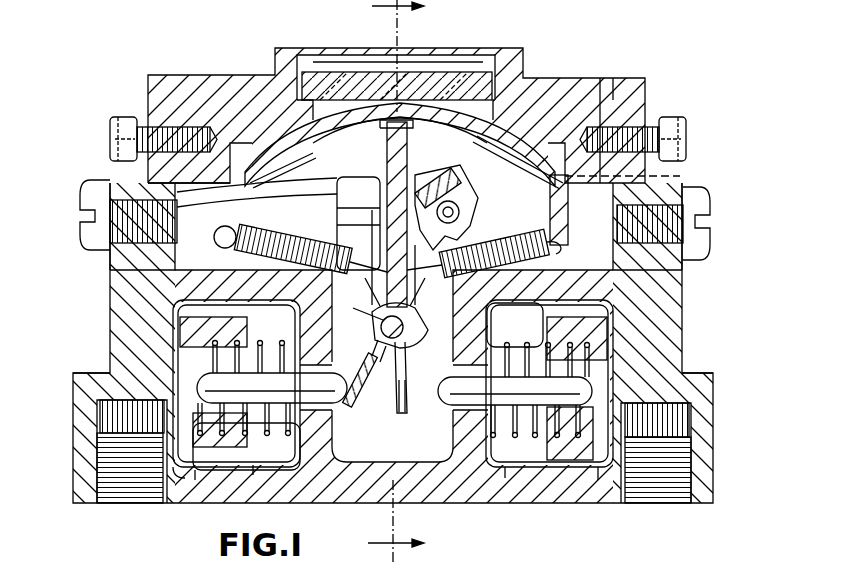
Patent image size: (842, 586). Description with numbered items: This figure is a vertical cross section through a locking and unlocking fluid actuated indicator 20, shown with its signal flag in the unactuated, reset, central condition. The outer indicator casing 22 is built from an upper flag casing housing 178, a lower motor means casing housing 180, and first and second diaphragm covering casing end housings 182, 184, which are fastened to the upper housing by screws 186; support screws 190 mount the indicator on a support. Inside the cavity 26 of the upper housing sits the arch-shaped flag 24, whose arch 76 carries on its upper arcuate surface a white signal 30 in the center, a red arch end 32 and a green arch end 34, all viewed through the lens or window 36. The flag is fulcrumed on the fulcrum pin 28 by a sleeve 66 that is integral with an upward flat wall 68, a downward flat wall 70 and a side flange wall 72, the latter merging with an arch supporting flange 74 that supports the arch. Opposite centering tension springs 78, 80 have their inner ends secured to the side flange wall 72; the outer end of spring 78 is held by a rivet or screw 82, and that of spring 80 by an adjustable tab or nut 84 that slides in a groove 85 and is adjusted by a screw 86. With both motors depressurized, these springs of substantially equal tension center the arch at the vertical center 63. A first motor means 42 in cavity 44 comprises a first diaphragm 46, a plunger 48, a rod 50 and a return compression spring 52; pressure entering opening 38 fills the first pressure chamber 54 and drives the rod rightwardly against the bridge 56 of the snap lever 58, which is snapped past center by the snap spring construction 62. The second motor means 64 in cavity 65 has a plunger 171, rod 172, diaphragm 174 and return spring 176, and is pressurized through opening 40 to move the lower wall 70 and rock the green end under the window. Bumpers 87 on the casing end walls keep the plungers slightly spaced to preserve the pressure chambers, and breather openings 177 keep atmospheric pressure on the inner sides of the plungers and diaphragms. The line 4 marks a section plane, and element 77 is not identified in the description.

The section line 4 is at (396, 523).
The locking and unlocking fluid actuated indicator 20 is at (718, 153).
The outer indicator casing 22 is at (420, 374).
The indicating signal means or flag 24 is at (448, 108).
The signal means receiving space or cavity 26 is at (197, 193).
The fulcrum pin 28 is at (408, 396).
The white signal 30 is at (372, 95).
The red arch end 32 is at (614, 86).
The green arch end 34 is at (253, 86).
The lens or window 36 is at (442, 76).
The first signal receiving opening 38 is at (97, 461).
The second signal receiving opening 40 is at (670, 490).
The fluid responsive first motor means 42 is at (253, 465).
The first motor means space or cavity 44 is at (197, 478).
The first diaphragm 46 is at (172, 331).
The first diaphragm shoe or plunger 48 is at (176, 346).
The first rod or stem 50 is at (291, 345).
The first return compression spring 52 is at (290, 480).
The first pressure chamber 54 is at (175, 490).
The bridge 56 is at (380, 406).
The snap lever or leg 58 is at (476, 197).
The snap spring construction 62 is at (423, 171).
The vertical center 63 is at (391, 53).
The second motor means 64 is at (595, 484).
The cavity 65 is at (506, 467).
The sleeve 66 is at (375, 323).
The upward flat wall 68 is at (400, 165).
The lower or downward flat wall 70 is at (390, 414).
The side flange wall 72 is at (380, 197).
The arch supporting flange 74 is at (323, 160).
The arch 76 is at (340, 178).
The slot 77 is at (340, 225).
The flag centering tension spring 78 is at (272, 228).
The flag centering tension spring 80 is at (480, 251).
The rivet or screw 82 is at (222, 246).
The adjustable tab or nut 84 is at (557, 246).
The groove 85 is at (672, 177).
The screw 86 is at (572, 220).
The bumpers 87 is at (110, 372).
The plunger 171 is at (618, 357).
The rod 172 is at (502, 348).
The diaphragm 174 is at (618, 334).
The return spring 176 is at (539, 488).
The breather openings 177 is at (262, 312).
The upper flag casing housing 178 is at (614, 86).
The lower motor means casing housing 180 is at (360, 488).
The first diaphragm covering casing end housing 182 is at (120, 271).
The second diaphragm covering casing end housing 184 is at (664, 272).
The screws 186 is at (97, 197).
The support screws 190 is at (121, 117).